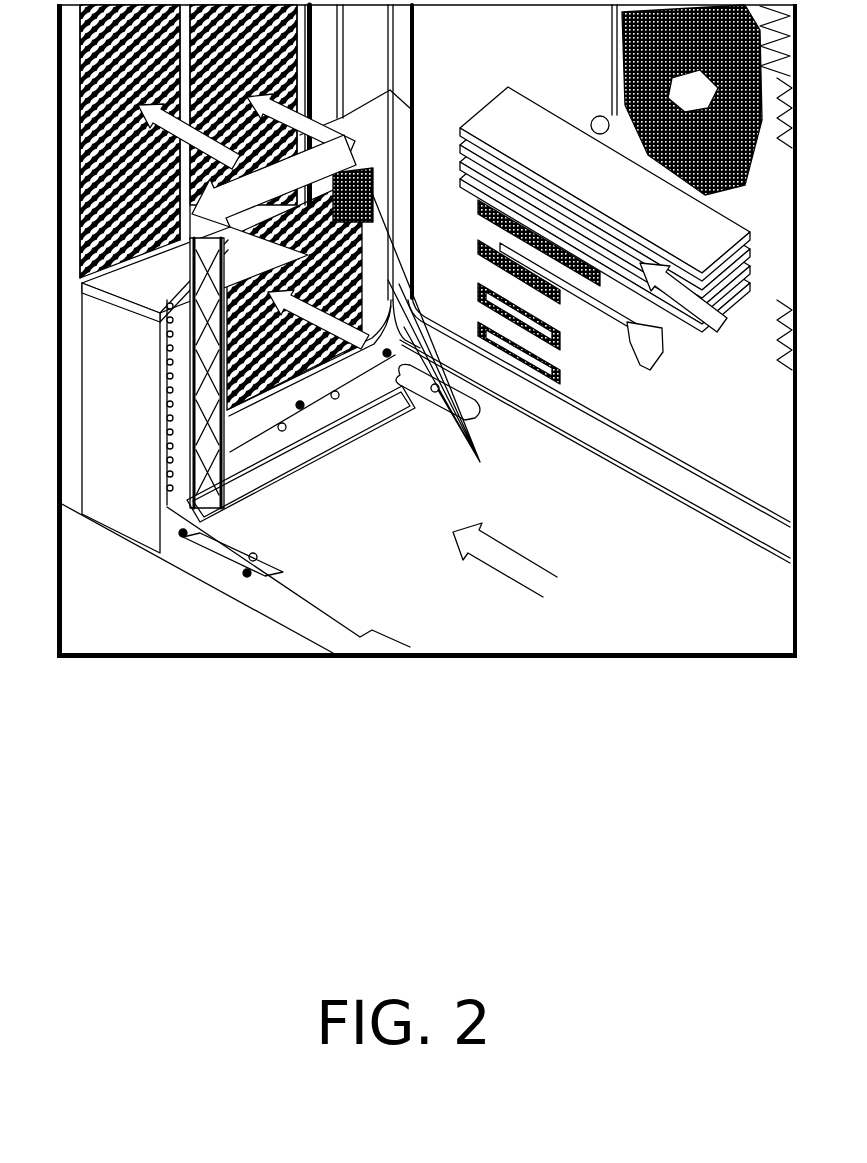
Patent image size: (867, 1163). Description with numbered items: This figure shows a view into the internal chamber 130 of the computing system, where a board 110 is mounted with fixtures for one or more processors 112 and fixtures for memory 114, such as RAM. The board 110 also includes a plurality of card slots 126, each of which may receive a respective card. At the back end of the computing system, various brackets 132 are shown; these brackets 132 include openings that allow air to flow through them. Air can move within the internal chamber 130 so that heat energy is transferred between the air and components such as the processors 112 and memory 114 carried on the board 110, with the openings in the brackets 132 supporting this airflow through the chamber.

The board 110 is at (745, 375).
The processor 112 is at (575, 57).
The memory 114 is at (491, 66).
The card slot 126 is at (675, 418).
The internal chamber 130 is at (655, 544).
The bracket 132 is at (480, 462).